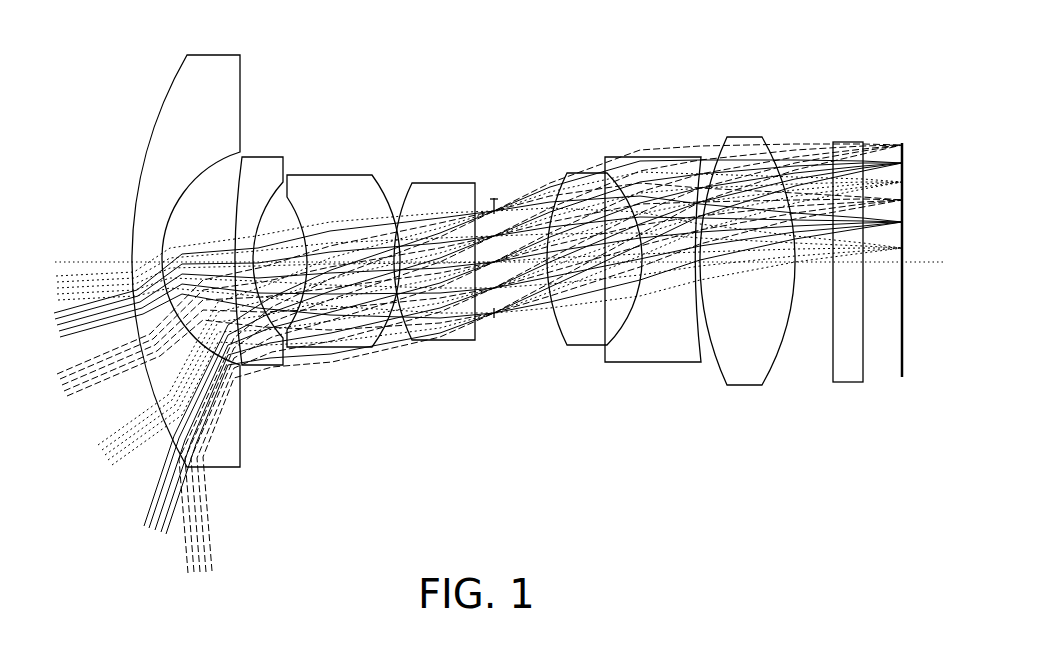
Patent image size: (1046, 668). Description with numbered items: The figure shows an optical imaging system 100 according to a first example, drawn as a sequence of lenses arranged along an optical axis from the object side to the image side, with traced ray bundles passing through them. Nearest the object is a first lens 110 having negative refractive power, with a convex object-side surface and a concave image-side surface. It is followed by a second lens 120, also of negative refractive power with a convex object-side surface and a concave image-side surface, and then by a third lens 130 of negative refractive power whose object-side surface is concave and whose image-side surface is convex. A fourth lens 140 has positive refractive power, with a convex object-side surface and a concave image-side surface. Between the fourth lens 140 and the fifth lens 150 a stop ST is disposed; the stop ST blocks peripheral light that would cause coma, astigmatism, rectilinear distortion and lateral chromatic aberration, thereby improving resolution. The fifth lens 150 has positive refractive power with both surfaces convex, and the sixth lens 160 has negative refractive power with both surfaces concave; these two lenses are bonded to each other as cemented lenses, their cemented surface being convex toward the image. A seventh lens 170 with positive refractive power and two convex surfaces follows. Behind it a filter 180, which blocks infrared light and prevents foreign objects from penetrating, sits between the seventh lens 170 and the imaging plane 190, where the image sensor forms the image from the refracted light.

The optical imaging system 100 is at (553, 119).
The first lens 110 is at (222, 468).
The second lens 120 is at (267, 368).
The third lens 130 is at (323, 349).
The fourth lens 140 is at (448, 342).
The stop ST is at (494, 318).
The fifth lens 150 is at (580, 346).
The sixth lens 160 is at (650, 363).
The seventh lens 170 is at (750, 386).
The filter 180 is at (848, 383).
The imaging plane 190 is at (900, 378).